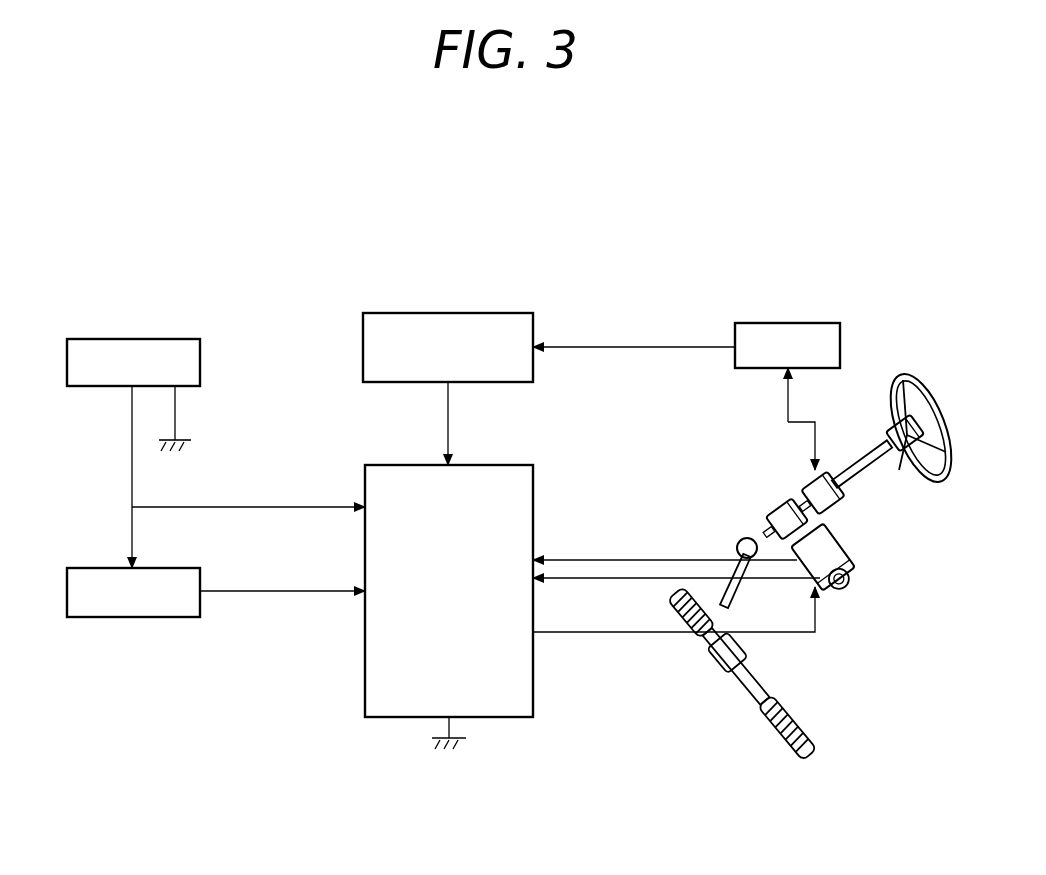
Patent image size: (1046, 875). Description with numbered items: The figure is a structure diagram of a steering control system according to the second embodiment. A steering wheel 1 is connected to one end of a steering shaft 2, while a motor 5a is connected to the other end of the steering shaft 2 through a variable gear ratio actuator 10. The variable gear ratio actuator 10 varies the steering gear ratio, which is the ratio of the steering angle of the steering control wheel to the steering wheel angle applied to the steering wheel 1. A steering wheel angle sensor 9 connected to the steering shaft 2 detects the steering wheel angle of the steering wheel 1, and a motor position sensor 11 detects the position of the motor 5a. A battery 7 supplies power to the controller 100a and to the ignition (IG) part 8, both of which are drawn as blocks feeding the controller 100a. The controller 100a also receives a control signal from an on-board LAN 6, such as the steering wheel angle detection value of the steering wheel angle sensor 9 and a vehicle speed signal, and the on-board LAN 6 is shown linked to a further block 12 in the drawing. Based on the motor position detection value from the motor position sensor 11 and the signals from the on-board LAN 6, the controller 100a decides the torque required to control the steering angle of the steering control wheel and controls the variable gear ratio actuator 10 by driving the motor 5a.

The steering wheel 1 is at (915, 378).
The steering shaft 2 is at (852, 460).
The motor 5a is at (837, 537).
The on-board LAN 6 is at (520, 303).
The battery 7 is at (199, 339).
The ignition (IG) part 8 is at (199, 568).
The steering wheel angle sensor 9 is at (808, 480).
The variable gear ratio actuator 10 is at (777, 502).
The motor position sensor 11 is at (852, 583).
The electronic stability controller (ESC) 12 is at (810, 323).
The controller 100a is at (515, 450).